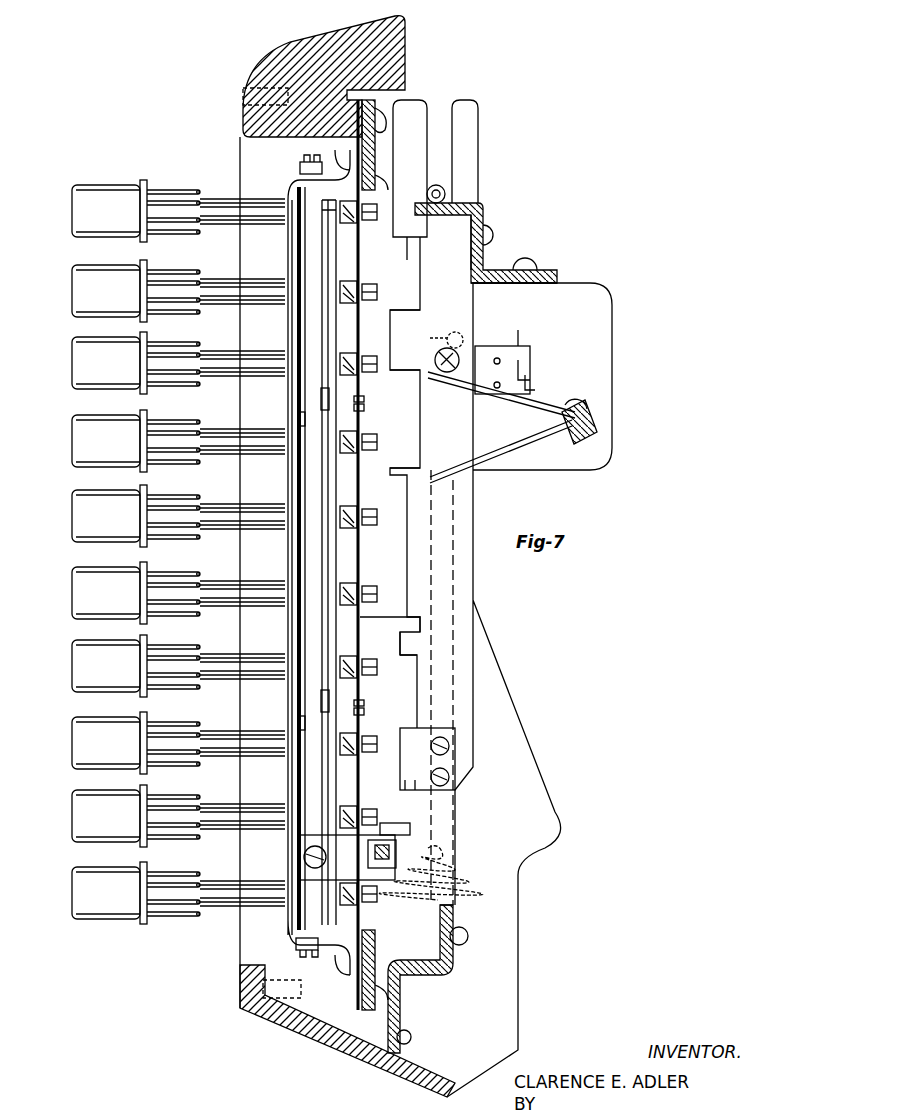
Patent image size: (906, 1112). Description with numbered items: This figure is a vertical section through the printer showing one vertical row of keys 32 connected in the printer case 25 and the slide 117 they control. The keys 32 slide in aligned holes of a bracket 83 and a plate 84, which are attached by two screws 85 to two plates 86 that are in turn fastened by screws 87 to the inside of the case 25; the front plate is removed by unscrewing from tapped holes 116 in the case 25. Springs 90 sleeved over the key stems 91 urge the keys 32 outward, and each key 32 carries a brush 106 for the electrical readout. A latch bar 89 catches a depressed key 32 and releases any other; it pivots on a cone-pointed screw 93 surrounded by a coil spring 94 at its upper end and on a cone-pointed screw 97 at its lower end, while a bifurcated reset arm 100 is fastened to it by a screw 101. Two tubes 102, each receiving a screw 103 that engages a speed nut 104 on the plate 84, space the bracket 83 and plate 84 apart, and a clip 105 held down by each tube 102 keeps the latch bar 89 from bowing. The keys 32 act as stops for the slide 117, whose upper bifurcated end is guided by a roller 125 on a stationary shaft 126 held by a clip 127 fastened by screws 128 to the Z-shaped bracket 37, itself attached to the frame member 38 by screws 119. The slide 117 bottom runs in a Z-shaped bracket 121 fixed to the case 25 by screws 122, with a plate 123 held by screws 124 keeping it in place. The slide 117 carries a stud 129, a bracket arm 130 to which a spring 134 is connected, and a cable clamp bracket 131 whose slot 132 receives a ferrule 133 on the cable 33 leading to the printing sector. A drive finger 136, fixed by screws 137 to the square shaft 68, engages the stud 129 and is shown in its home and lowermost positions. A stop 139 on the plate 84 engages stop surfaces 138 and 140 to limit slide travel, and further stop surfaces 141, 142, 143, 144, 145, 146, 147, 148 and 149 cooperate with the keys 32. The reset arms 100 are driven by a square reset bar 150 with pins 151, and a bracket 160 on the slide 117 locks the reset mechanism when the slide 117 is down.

The printer case 25 is at (290, 42).
The tapped holes 116 is at (243, 94).
The keys 32 is at (74, 262).
The brush 106 is at (198, 235).
The stems 91 is at (215, 203).
The bracket 83 is at (288, 266).
The latch bar 89 is at (297, 326).
The springs 90 is at (340, 282).
The plate 84 is at (360, 285).
The coil spring 94 is at (330, 212).
The cone-pointed screw 93 is at (300, 166).
The screws 85 is at (336, 160).
The cone-pointed screw 97 is at (296, 944).
The bifurcated reset arm 100 is at (303, 858).
The screw 101 is at (332, 838).
The clip 105 is at (325, 380).
The tubes 102 is at (348, 414).
The screw 103 is at (364, 399).
The speed nut 104 is at (364, 410).
The screws 87 is at (380, 105).
The stop surface 141 is at (388, 128).
The plates 86 is at (376, 180).
The slide 117 is at (478, 130).
The stop surface 140 is at (407, 528).
The stationary shaft 126 is at (415, 206).
The clip 127 is at (484, 215).
The bracket 37 is at (557, 272).
The roller 125 is at (445, 190).
The screws 128 is at (494, 235).
The screws 119 is at (527, 262).
The frame member 38 is at (612, 318).
The stud 129 is at (435, 358).
The bracket arm 130 is at (445, 340).
The bifurcated cable clamp bracket 131 is at (486, 348).
The cable 33 is at (520, 338).
The ferrule 133 is at (530, 362).
The slot 132 is at (533, 390).
The drive finger 136 is at (520, 410).
The square shaft 68 is at (597, 425).
The screws 137 is at (577, 400).
The stop surface 142 is at (418, 237).
The stop surface 143 is at (390, 318).
The stop surface 144 is at (418, 370).
The stop surface 145 is at (392, 478).
The stop 139 is at (386, 617).
The stop surface 138 is at (417, 632).
The stop surface 146 is at (400, 648).
The stop surface 147 is at (416, 670).
The bracket 160 is at (410, 772).
The stop surface 148 is at (402, 790).
The pins 151 is at (380, 835).
The square reset bar 150 is at (389, 852).
The stop surface 149 is at (400, 875).
The spring 134 is at (446, 872).
The Z-shaped bracket 121 is at (400, 1000).
The plate 123 is at (456, 920).
The screws 124 is at (466, 938).
The screws 122 is at (407, 1044).